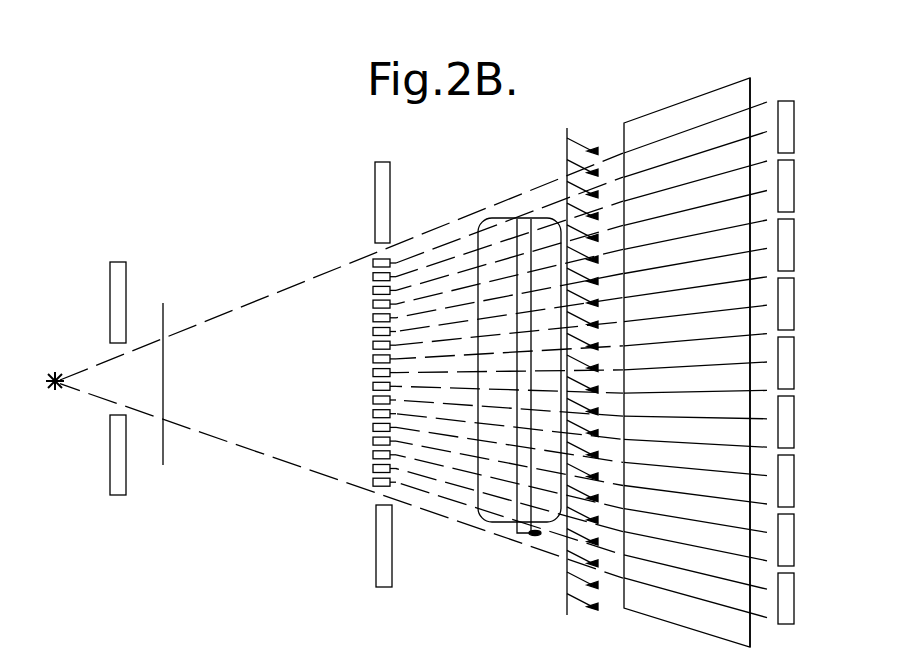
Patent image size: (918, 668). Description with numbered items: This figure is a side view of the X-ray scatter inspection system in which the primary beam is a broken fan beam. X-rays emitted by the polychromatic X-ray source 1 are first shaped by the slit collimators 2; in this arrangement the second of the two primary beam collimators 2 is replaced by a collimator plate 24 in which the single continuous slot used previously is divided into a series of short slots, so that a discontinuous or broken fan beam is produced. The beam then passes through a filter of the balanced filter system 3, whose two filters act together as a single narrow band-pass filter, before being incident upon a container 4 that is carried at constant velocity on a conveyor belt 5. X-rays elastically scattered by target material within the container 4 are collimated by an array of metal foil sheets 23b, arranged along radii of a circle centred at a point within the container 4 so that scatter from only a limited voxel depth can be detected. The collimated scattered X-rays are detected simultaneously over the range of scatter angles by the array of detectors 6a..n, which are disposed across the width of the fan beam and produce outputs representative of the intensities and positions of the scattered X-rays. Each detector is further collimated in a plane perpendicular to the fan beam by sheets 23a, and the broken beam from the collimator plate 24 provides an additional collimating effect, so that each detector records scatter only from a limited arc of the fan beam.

The polychromatic X-ray source 1 is at (48, 378).
The slit collimators 2 is at (109, 308).
The balanced filter system 3 is at (165, 321).
The container 4 is at (522, 217).
The conveyor belt 5 is at (586, 128).
The collimator plate 24 is at (374, 215).
The sheets 23a is at (725, 118).
The array of metal foil sheets 23b is at (653, 122).
The array of detectors 6a..n is at (812, 133).